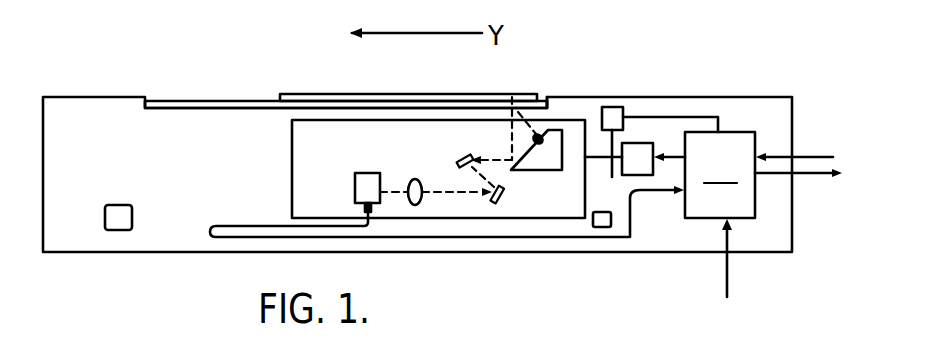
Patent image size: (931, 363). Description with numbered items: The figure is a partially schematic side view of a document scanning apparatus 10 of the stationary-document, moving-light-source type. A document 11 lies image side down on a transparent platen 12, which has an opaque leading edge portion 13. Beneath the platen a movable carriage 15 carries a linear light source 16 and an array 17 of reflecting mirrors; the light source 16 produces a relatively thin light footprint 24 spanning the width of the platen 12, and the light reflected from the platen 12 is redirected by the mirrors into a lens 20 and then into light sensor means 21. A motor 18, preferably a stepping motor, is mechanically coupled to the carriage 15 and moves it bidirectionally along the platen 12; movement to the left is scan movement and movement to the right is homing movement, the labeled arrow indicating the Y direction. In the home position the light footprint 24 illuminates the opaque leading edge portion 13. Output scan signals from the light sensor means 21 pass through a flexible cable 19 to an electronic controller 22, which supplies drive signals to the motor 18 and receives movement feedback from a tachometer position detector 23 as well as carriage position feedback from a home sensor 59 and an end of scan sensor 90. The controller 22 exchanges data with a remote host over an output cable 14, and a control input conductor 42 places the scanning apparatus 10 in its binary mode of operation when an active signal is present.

The document scanning apparatus 10 is at (82, 90).
The document 11 is at (326, 96).
The transparent platen 12 is at (219, 100).
The opaque leading edge portion 13 is at (552, 76).
The output cable 14 is at (810, 148).
The movable carriage 15 is at (280, 160).
The linear light source 16 is at (556, 120).
The array of reflecting mirrors 17 is at (501, 143).
The motor 18 is at (638, 155).
The flexible cable 19 is at (648, 244).
The lens 20 is at (416, 180).
The light sensor means 21 is at (355, 185).
The electronic controller 22 is at (720, 175).
The tachometer position detector 23 is at (613, 118).
The light footprint 24 is at (511, 88).
The control input conductor 42 is at (731, 270).
The home sensor 59 is at (602, 228).
The end of scan sensor 90 is at (115, 230).